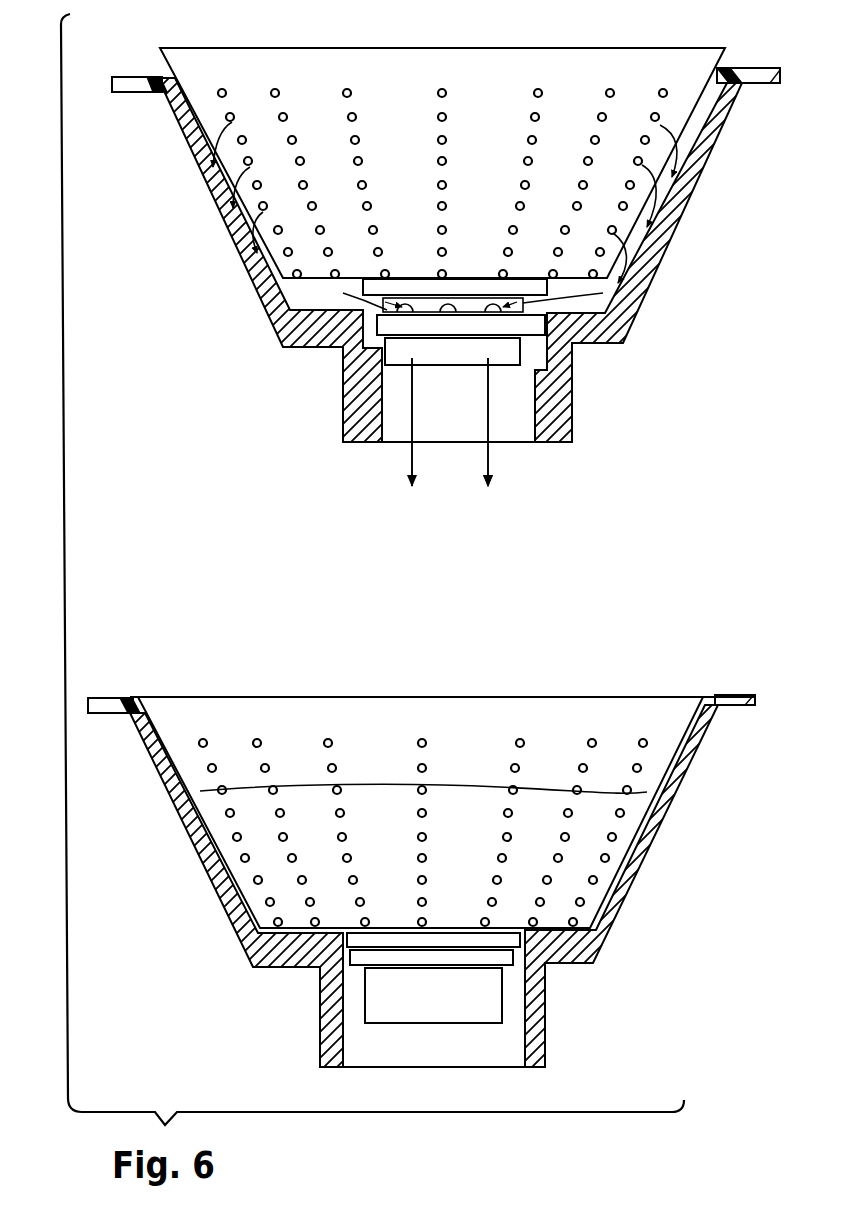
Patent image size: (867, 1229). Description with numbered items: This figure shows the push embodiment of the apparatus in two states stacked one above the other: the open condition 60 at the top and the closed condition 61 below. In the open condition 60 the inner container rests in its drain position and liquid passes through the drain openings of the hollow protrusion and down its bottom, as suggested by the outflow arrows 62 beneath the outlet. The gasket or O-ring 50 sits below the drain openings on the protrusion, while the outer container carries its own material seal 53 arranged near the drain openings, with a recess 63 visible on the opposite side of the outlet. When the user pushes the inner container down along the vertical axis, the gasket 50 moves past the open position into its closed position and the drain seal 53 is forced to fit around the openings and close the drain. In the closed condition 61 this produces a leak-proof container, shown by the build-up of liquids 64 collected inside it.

The open condition 60 is at (182, 167).
The closed condition 61 is at (210, 897).
The gasket or O-ring 50 is at (549, 325).
The material seal 53 is at (362, 351).
The outflow direction 62 is at (448, 441).
The recess 63 is at (543, 374).
The liquids 64 is at (574, 838).